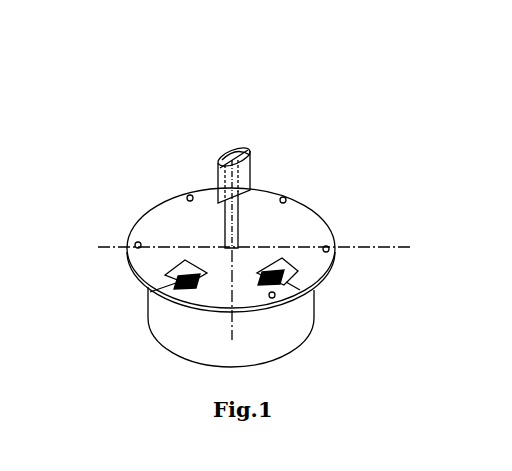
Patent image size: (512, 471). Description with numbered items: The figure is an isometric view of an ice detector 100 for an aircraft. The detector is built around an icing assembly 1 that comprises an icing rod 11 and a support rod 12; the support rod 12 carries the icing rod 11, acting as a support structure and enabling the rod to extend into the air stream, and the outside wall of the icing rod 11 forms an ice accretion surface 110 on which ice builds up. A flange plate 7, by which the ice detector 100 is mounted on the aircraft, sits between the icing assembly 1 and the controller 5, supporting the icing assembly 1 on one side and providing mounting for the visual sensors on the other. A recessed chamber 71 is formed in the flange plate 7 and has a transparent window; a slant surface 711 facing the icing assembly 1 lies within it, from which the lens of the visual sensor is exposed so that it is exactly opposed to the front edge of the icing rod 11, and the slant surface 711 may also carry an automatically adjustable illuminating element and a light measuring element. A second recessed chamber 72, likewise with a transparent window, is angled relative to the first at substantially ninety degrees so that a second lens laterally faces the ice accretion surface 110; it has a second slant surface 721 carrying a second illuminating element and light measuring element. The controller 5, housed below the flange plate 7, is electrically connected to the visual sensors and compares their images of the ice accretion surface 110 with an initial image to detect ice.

The ice detector 100 is at (432, 80).
The icing assembly 1 is at (445, 108).
The icing rod 11 is at (232, 166).
The ice accretion surface 110 is at (240, 158).
The support rod 12 is at (239, 229).
The flange plate 7 is at (312, 278).
The recessed chamber 71 is at (188, 262).
The second recessed chamber 72 is at (222, 190).
The slant surface 711 is at (163, 297).
The second slant surface 721 is at (288, 276).
The controller 5 is at (318, 310).